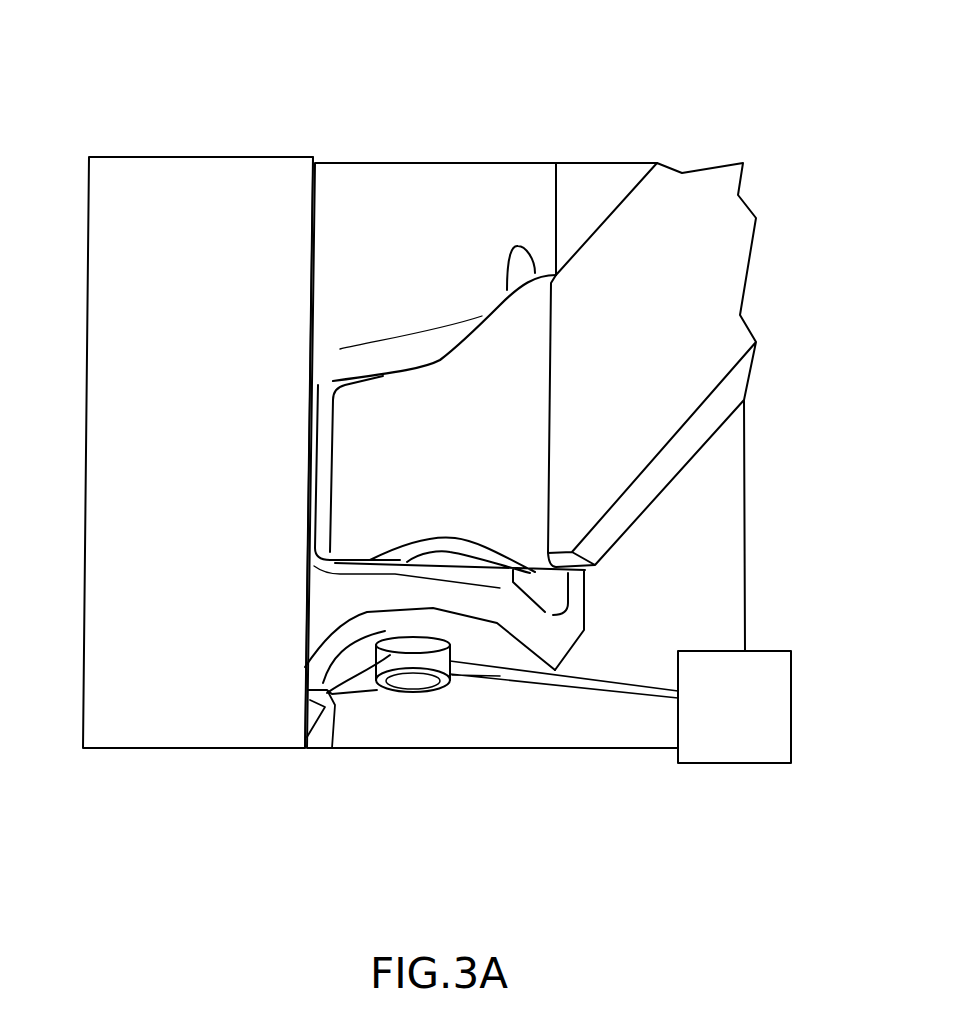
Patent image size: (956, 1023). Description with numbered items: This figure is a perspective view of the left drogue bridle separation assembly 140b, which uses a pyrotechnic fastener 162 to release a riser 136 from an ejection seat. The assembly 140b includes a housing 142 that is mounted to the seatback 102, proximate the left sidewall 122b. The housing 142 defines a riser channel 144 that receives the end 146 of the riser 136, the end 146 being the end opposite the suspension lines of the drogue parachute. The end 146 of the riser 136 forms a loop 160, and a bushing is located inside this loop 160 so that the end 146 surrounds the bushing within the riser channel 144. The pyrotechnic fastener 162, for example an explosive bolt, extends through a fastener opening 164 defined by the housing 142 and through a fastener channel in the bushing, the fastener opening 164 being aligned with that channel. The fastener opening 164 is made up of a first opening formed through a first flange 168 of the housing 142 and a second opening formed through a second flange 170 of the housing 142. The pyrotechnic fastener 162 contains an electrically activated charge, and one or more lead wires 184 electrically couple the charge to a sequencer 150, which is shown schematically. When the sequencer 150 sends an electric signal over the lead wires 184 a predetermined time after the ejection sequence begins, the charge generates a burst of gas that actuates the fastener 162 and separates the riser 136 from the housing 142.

The seatback 102 is at (157, 170).
The left sidewall 122b is at (242, 452).
The riser 136 is at (652, 407).
The left drogue bridle separation assembly 140b is at (338, 146).
The housing 142 is at (478, 198).
The riser channel 144 is at (331, 376).
The end 146 is at (340, 511).
The sequencer 150 is at (734, 707).
The loop 160 is at (453, 578).
The pyrotechnic fastener 162 is at (310, 688).
The fastener opening 164 is at (393, 631).
The first flange 168 is at (391, 587).
The second flange 170 is at (396, 352).
The lead wire 184 is at (545, 683).